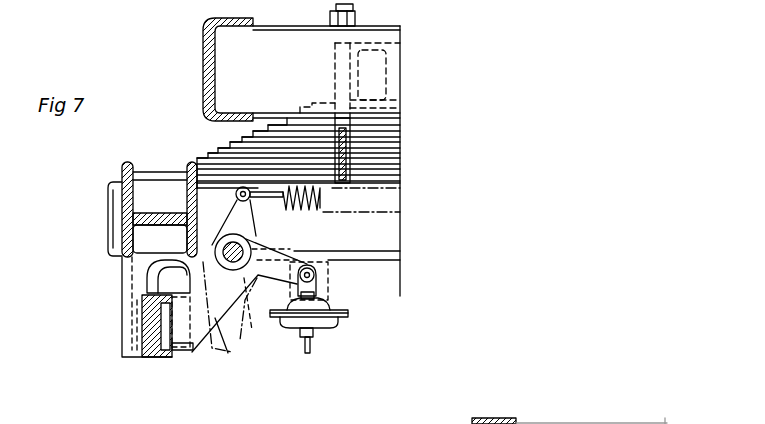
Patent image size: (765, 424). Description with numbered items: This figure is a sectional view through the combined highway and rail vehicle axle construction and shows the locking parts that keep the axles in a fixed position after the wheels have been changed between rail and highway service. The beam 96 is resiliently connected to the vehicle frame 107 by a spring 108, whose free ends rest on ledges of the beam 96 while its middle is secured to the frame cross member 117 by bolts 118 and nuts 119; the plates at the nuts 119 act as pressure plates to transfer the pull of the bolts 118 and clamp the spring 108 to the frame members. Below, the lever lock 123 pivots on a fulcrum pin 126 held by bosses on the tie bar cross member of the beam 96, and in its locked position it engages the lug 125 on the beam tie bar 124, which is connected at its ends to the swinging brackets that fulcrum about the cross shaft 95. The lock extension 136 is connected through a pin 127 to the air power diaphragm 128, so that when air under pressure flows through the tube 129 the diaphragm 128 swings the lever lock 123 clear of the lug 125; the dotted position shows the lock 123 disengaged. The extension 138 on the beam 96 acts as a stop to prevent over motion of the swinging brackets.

The cross shaft 95 is at (107, 232).
The beam 96 is at (118, 168).
The vehicle frame 107 is at (203, 56).
The spring 108 is at (242, 142).
The frame cross member 117 is at (230, 112).
The bolt 118 is at (335, 78).
The nut 119 is at (354, 19).
The lever lock 123 is at (232, 333).
The beam tie bar 124 is at (155, 358).
The lug 125 is at (183, 353).
The fulcrum pin 126 is at (254, 239).
The pin 127 is at (318, 276).
The air power diaphragm 128 is at (343, 315).
The tube 129 is at (313, 349).
The lock extension 136 is at (264, 314).
The extension 138 is at (121, 358).